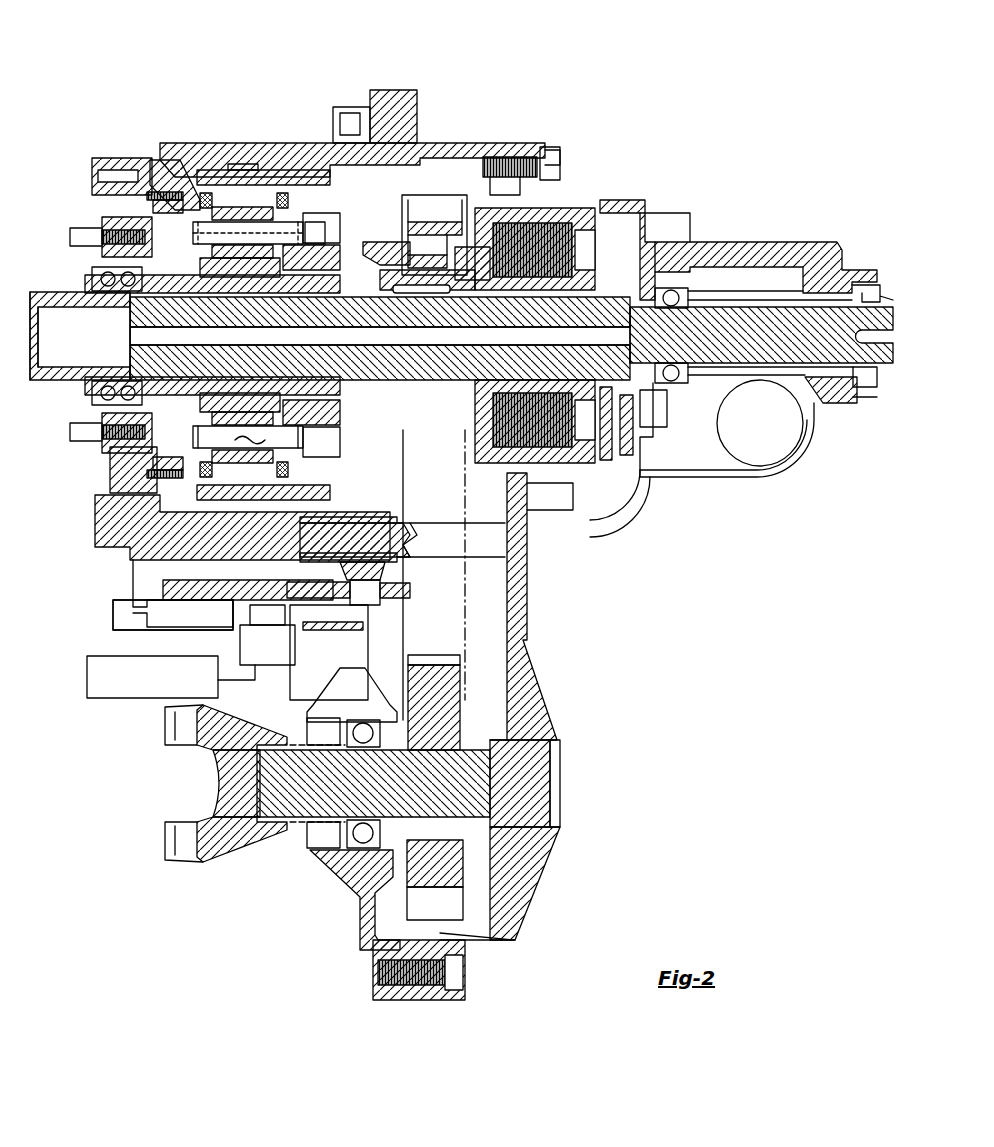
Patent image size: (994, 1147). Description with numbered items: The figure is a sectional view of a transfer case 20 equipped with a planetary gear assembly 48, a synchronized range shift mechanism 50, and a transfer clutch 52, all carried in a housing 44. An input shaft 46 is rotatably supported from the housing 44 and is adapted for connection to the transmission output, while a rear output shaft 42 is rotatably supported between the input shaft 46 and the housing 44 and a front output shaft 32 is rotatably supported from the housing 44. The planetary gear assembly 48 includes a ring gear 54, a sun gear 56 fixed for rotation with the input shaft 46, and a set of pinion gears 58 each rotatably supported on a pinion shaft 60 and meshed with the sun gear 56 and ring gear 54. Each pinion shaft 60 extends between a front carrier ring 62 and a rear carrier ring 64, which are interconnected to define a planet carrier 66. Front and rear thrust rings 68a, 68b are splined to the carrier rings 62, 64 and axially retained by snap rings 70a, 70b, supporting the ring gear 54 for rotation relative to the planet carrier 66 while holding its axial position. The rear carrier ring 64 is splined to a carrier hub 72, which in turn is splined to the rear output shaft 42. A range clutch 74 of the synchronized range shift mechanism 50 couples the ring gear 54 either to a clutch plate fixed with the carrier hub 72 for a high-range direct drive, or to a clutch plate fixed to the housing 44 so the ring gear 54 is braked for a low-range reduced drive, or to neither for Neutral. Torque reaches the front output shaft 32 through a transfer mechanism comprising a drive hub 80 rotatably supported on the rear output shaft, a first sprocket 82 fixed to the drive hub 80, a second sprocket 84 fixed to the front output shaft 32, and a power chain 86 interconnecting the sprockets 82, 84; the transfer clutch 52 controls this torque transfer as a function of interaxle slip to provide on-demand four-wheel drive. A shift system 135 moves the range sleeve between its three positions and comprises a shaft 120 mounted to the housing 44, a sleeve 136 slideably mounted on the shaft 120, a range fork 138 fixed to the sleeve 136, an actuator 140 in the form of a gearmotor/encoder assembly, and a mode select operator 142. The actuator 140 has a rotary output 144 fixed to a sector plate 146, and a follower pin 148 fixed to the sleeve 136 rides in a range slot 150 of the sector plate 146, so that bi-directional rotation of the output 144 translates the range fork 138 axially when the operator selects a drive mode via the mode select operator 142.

The transfer case 20 is at (533, 104).
The front output shaft 32 is at (518, 776).
The rear output shaft 42 is at (768, 340).
The housing 44 is at (530, 140).
The input shaft 46 is at (55, 378).
The planetary gear assembly 48 is at (190, 236).
The synchronized range shift mechanism 50 is at (303, 510).
The transfer clutch 52 is at (568, 212).
The ring gear 54 is at (218, 170).
The sun gear 56 is at (228, 270).
The pinion gears 58 is at (230, 425).
The pinion shaft 60 is at (270, 440).
The front carrier ring 62 is at (215, 432).
The rear carrier ring 64 is at (370, 280).
The planet carrier 66 is at (305, 462).
The front thrust ring 68a is at (282, 191).
The rear thrust ring 68b is at (200, 191).
The snap ring 70a is at (317, 215).
The snap ring 70b is at (190, 226).
The carrier hub 72 is at (415, 285).
The range clutch 74 is at (200, 522).
The drive hub 80 is at (417, 275).
The first sprocket 82 is at (460, 270).
The second sprocket 84 is at (440, 887).
The power chain 86 is at (462, 850).
The shaft 120 is at (447, 535).
The shift system 135 is at (100, 612).
The sleeve 136 is at (375, 530).
The range fork 138 is at (241, 166).
The actuator 140 is at (292, 645).
The mode select operator 142 is at (118, 698).
The rotary output 144 is at (266, 640).
The sector plate 146 is at (412, 590).
The follower pin 148 is at (380, 585).
The range slot 150 is at (372, 600).